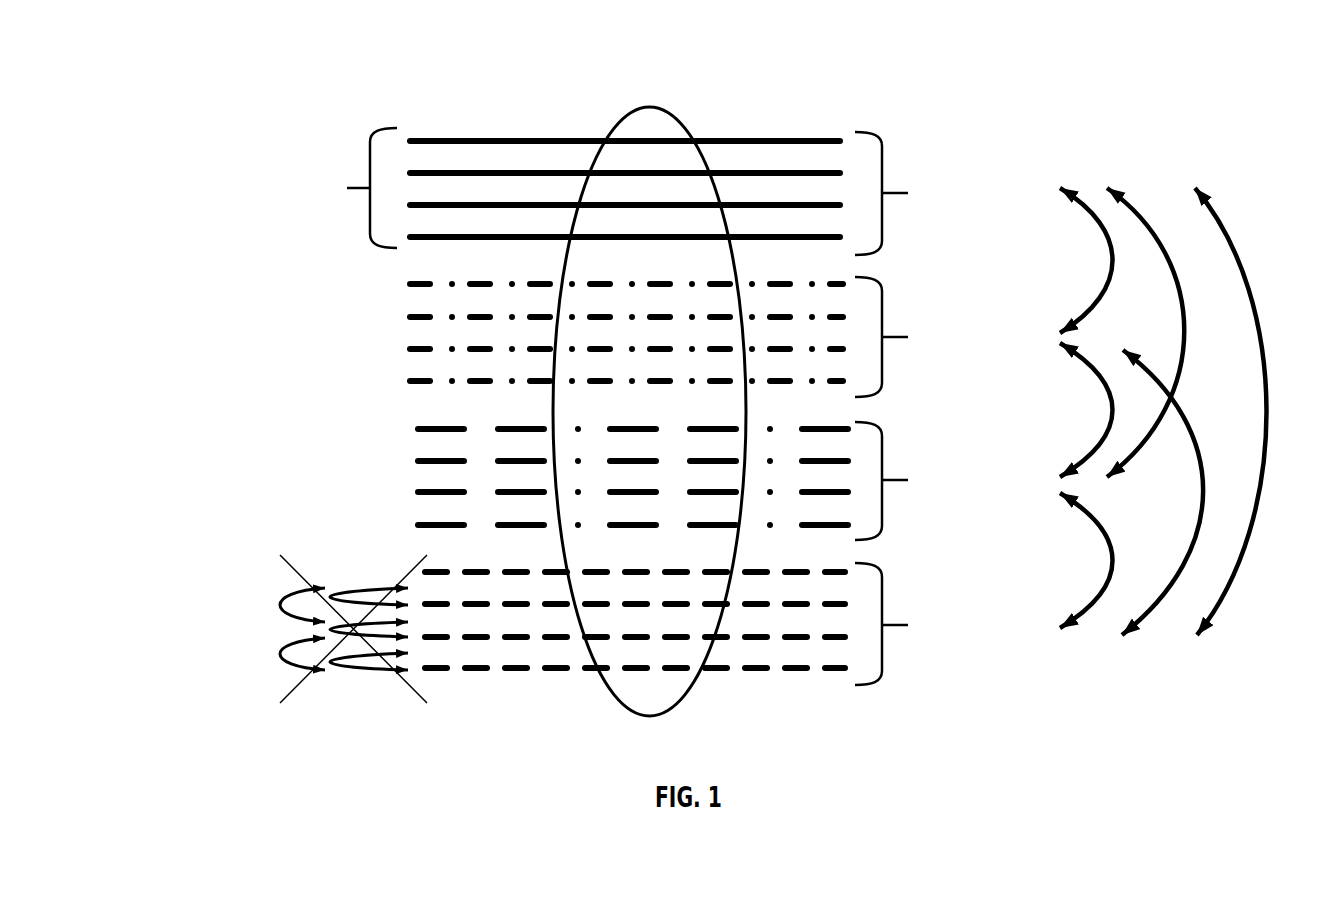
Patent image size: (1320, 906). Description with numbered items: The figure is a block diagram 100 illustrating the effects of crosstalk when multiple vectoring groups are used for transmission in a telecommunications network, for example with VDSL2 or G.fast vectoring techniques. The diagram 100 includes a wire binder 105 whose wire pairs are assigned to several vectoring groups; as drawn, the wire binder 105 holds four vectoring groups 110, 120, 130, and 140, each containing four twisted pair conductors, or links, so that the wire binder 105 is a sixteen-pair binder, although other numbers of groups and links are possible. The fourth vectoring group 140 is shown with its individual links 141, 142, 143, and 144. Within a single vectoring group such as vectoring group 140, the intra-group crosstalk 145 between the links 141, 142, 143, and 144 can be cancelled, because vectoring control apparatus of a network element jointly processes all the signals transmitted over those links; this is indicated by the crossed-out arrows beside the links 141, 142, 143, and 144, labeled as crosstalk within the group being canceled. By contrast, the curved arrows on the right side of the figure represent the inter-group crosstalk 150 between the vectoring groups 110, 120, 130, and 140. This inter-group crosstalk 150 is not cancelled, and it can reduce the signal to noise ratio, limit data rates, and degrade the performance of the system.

The block diagram 100 is at (271, 72).
The wire binder 105 is at (686, 123).
The vectoring group 110 is at (982, 227).
The vectoring group 120 is at (982, 374).
The vectoring group 130 is at (982, 524).
The vectoring group 140 is at (982, 662).
The link 141 is at (848, 571).
The link 142 is at (848, 604).
The link 143 is at (848, 637).
The link 144 is at (832, 672).
The intra-group crosstalk 145 is at (202, 650).
The inter-group crosstalk 150 is at (1207, 161).